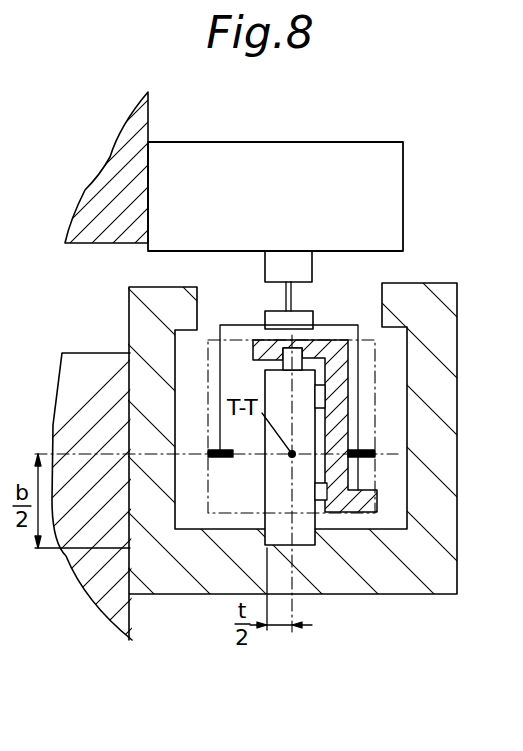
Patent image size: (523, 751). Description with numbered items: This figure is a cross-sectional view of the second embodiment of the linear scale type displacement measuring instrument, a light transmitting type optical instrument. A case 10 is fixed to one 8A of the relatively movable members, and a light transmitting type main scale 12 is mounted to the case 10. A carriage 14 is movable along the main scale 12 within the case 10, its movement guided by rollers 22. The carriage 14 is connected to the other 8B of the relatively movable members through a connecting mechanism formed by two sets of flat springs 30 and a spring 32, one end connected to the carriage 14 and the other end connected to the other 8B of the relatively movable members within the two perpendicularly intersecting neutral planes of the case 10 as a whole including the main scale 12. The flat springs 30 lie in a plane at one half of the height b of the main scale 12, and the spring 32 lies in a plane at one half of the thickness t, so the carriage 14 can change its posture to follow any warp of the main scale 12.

The case 10 is at (413, 582).
The main scale 12 is at (275, 445).
The carriage 14 is at (335, 345).
The rollers 22 is at (284, 364).
The flat springs 30 is at (220, 458).
The spring 32 is at (291, 305).
The one of relatively movable members 8A is at (97, 352).
The other of relatively movable members 8B is at (148, 112).